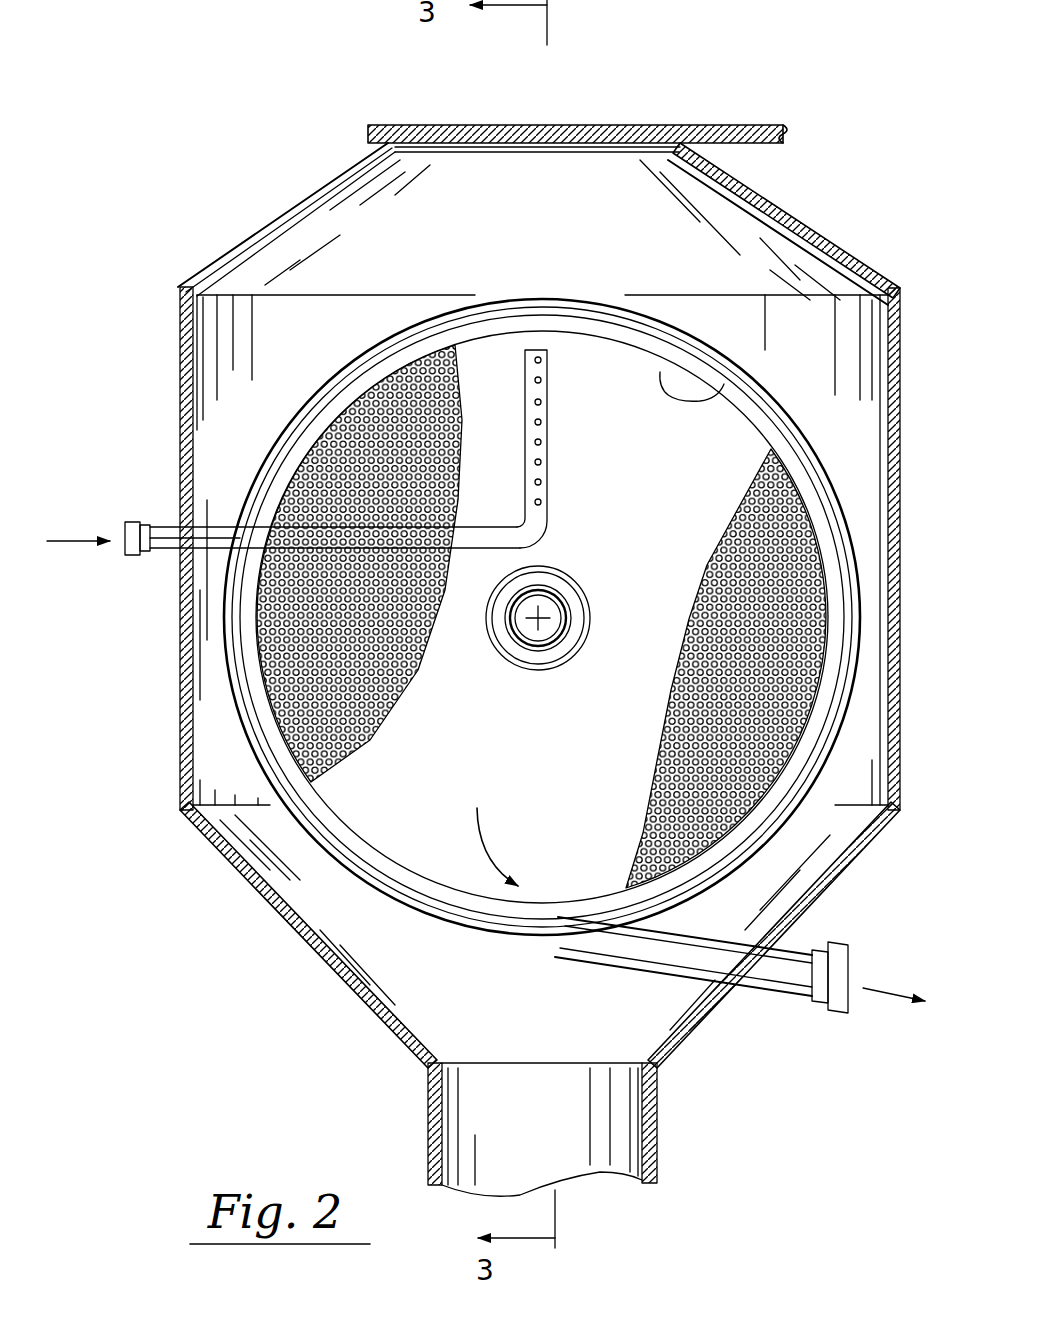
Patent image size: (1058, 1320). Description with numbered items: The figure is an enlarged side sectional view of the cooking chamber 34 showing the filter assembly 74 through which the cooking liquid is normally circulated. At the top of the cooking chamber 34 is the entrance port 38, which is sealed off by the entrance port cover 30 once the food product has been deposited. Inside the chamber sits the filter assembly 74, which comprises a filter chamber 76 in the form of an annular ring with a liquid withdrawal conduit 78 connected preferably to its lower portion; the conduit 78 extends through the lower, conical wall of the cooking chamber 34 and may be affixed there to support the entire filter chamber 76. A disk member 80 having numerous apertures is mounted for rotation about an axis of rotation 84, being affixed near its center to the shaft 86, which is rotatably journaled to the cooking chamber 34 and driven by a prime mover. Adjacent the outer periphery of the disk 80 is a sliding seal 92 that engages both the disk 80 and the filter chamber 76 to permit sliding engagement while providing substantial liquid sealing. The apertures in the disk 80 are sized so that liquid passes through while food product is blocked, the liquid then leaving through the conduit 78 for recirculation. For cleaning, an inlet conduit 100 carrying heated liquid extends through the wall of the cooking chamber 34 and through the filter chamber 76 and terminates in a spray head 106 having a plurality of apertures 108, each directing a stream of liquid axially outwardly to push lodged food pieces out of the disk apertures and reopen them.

The entrance port cover 30 is at (628, 125).
The entrance port 38 is at (600, 150).
The cooking chamber 34 is at (808, 222).
The filter assembly 74 is at (327, 903).
The filter chamber 76 is at (797, 426).
The sliding seal 92 is at (700, 398).
The disk member 80 is at (395, 705).
The shaft 86 is at (540, 598).
The axis of rotation 84 is at (545, 612).
The inlet conduit 100 is at (160, 525).
The nozzle pipe 106 is at (565, 497).
The aperture 108 is at (560, 396).
The liquid withdrawal conduit 78 is at (790, 995).